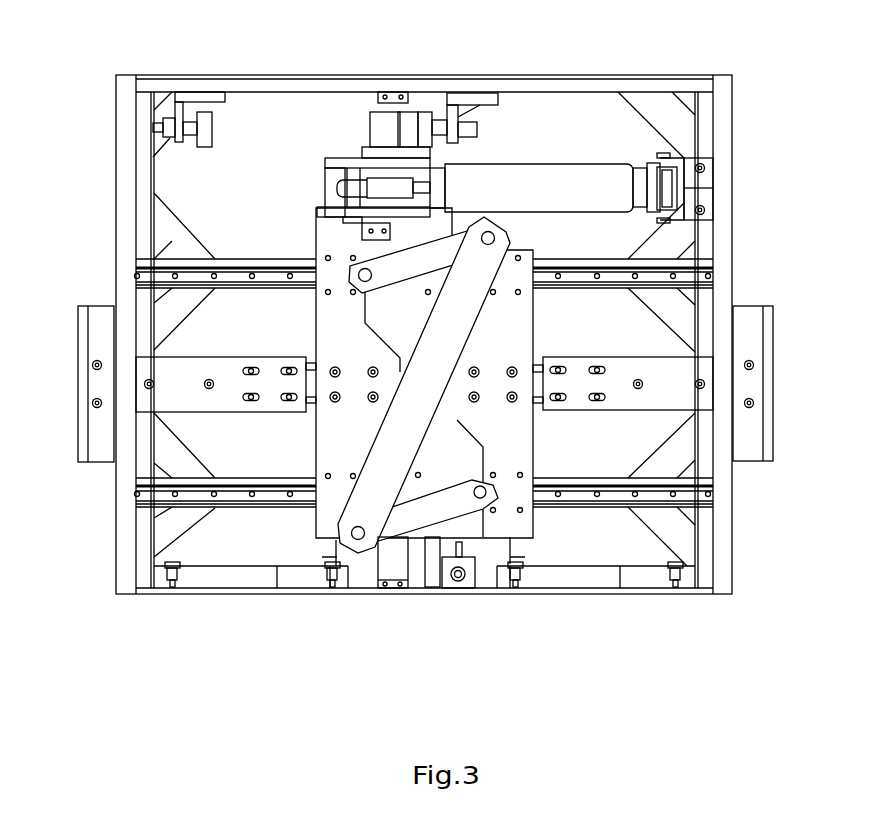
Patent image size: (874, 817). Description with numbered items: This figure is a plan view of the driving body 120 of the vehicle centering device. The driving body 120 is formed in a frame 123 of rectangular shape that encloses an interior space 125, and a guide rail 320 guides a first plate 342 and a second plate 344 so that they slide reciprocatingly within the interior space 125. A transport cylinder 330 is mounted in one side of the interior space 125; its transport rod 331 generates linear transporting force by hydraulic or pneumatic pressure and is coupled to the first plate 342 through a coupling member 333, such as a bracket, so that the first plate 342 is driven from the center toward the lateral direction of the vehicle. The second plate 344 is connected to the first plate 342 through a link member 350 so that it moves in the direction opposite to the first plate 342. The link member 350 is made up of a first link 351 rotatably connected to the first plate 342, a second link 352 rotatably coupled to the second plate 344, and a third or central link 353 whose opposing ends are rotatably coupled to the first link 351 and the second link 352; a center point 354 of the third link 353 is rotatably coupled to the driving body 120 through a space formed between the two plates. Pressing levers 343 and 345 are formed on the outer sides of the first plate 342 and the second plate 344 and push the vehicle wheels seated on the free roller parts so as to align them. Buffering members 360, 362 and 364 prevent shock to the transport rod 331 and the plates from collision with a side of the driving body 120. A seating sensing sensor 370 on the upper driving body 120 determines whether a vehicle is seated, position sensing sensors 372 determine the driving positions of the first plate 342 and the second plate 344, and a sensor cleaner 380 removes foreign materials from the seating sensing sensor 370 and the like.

The driving body 120 is at (752, 116).
The frame 123 is at (127, 134).
The interior space 125 is at (553, 115).
The guide rail 320 is at (253, 262).
The transport cylinder 330 is at (617, 178).
The transport rod 331 is at (397, 186).
The coupling member 333 is at (337, 158).
The first plate 342 is at (336, 447).
The pressing lever 343 is at (76, 384).
The second plate 344 is at (430, 386).
The pressing lever 345 is at (768, 388).
The link member 350 is at (482, 330).
The first link 351 is at (400, 253).
The second link 352 is at (403, 518).
The third link 353 is at (363, 502).
The center point 354 is at (520, 448).
The buffering member 360 is at (377, 122).
The buffering member 362 is at (428, 122).
The buffering member 364 is at (203, 123).
The seating sensing sensor 370 is at (457, 580).
The position sensing sensor 372 is at (172, 588).
The sensor cleaner 380 is at (433, 575).